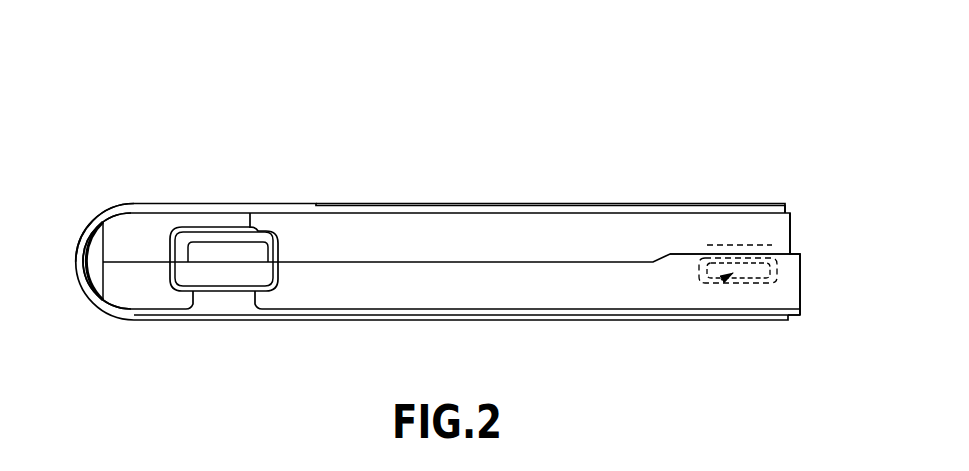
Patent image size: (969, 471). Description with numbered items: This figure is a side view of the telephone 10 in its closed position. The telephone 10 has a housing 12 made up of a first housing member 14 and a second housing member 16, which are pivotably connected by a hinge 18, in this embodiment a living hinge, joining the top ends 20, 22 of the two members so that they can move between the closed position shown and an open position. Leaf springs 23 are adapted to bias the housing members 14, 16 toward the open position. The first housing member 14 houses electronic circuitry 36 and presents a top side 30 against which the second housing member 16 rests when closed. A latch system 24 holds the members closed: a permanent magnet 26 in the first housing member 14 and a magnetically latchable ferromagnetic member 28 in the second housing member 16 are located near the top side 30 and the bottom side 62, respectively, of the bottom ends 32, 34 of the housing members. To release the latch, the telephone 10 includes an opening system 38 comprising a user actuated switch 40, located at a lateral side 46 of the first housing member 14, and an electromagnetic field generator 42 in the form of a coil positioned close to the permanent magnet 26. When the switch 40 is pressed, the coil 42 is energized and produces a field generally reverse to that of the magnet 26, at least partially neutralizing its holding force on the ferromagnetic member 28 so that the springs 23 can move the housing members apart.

The telephone 10 is at (724, 109).
The housing 12 is at (786, 212).
The first housing member 14 is at (463, 321).
The second housing member 16 is at (478, 206).
The hinge 18 is at (102, 272).
The top end 20 is at (88, 297).
The top end 22 is at (100, 243).
The leaf springs 23 is at (78, 256).
The latch system 24 is at (813, 267).
The permanent magnet 26 is at (715, 284).
The ferromagnetic member 28 is at (738, 246).
The top side 30 is at (400, 263).
The bottom end 32 is at (793, 296).
The bottom end 34 is at (776, 246).
The electronic circuitry 36 is at (567, 289).
The opening system 38 is at (198, 272).
The switch 40 is at (215, 281).
The electromagnetic field generator 42 is at (756, 285).
The lateral side 46 is at (604, 300).
The bottom side 62 is at (453, 262).